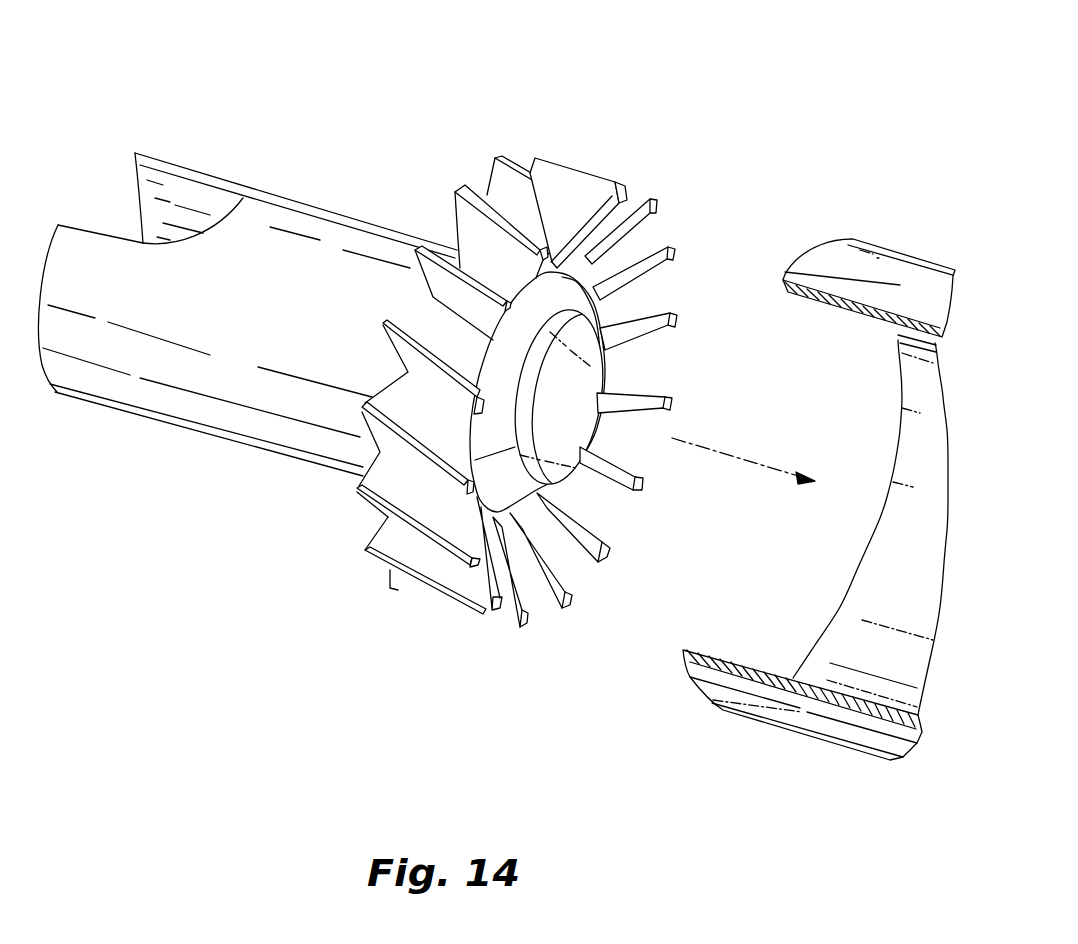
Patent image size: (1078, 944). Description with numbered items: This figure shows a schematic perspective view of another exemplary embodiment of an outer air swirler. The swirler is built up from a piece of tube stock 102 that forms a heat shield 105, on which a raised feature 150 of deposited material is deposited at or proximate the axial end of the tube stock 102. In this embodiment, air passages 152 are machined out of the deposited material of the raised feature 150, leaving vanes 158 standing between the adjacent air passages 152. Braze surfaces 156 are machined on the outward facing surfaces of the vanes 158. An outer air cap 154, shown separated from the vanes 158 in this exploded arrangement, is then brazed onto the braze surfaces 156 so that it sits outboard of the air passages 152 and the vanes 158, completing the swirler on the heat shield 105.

The piece of tube stock 102 is at (248, 299).
The heat shield 105 is at (289, 204).
The raised feature 150 is at (525, 339).
The air passages 152 is at (415, 305).
The outer air cap 154 is at (867, 240).
The braze surfaces 156 is at (565, 156).
The vanes 158 is at (420, 558).